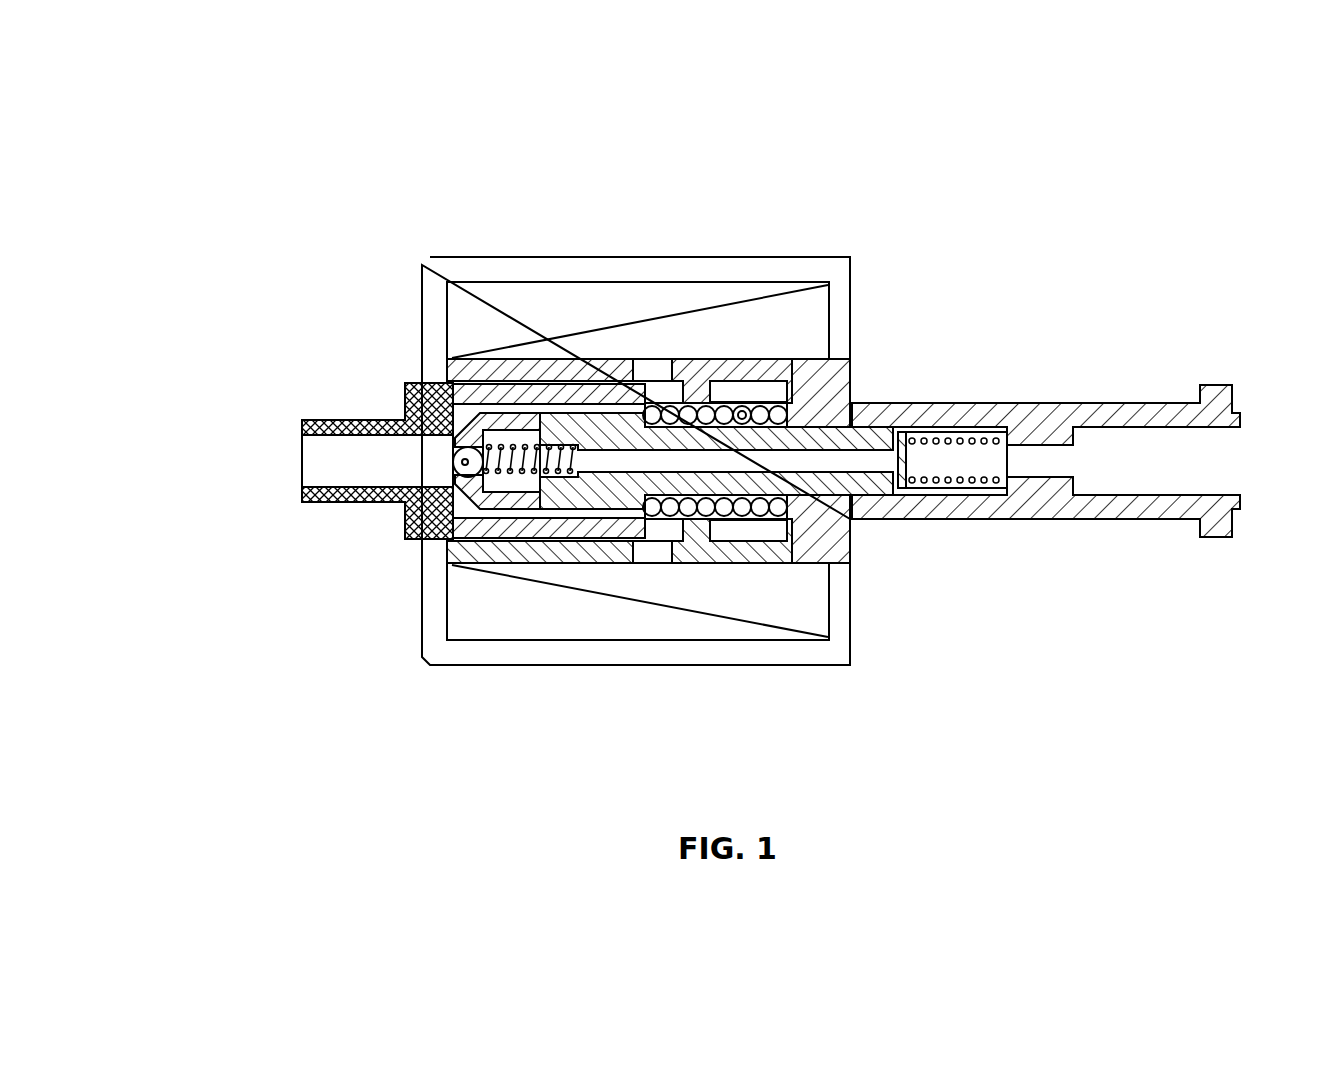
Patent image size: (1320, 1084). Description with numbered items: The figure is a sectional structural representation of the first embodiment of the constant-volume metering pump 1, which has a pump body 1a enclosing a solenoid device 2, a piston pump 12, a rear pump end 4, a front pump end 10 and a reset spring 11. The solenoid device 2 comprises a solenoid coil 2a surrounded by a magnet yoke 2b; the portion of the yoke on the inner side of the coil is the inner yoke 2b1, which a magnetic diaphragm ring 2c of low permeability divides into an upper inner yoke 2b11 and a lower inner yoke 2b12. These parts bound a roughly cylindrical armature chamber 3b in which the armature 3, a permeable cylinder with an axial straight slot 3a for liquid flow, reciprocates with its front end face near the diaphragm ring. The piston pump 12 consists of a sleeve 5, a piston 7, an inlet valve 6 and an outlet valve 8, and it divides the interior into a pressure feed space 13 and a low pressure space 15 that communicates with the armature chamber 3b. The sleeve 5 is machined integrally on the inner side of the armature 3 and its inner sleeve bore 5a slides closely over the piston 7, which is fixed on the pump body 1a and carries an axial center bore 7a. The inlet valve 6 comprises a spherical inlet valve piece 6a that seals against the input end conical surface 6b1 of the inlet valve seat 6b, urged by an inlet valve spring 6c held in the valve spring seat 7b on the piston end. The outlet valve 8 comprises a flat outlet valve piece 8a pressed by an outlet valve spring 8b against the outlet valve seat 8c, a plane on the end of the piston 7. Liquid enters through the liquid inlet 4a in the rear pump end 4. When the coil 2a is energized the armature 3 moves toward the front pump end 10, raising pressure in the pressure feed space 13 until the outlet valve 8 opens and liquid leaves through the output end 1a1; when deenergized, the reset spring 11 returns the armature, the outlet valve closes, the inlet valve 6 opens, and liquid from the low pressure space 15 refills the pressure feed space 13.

The constant-volume metering pump 1 is at (305, 374).
The pump body 1a is at (860, 247).
The output end 1a1 is at (1134, 413).
The solenoid device 2 is at (720, 246).
The solenoid coil 2a is at (587, 315).
The magnet yoke 2b is at (410, 337).
The inner yoke 2b1 is at (719, 565).
The upper inner yoke 2b11 is at (601, 367).
The lower inner yoke 2b12 is at (766, 374).
The magnetic diaphragm ring 2c is at (663, 372).
The armature 3 is at (448, 356).
The axial straight slot 3a is at (482, 392).
The armature chamber 3b is at (651, 394).
The rear pump end 4 is at (405, 413).
The liquid inlet 4a is at (382, 470).
The sleeve 5 is at (462, 502).
The inner sleeve bore 5a is at (470, 522).
The inlet valve 6 is at (443, 461).
The inlet valve piece 6a is at (458, 488).
The inlet valve seat 6b is at (469, 477).
The input end conical surface 6b1 is at (490, 489).
The inlet valve spring 6c is at (535, 473).
The piston 7 is at (772, 486).
The center bore 7a is at (845, 466).
The valve spring seat 7b is at (568, 481).
The outlet valve 8 is at (992, 503).
The outlet valve piece 8a is at (907, 490).
The outlet valve spring 8b is at (965, 436).
The outlet valve seat 8c is at (932, 413).
The front pump end 10 is at (696, 386).
The reset spring 11 is at (791, 395).
The piston pump 12 is at (517, 411).
The pressure feed space 13 is at (532, 431).
The low pressure space 15 is at (650, 545).